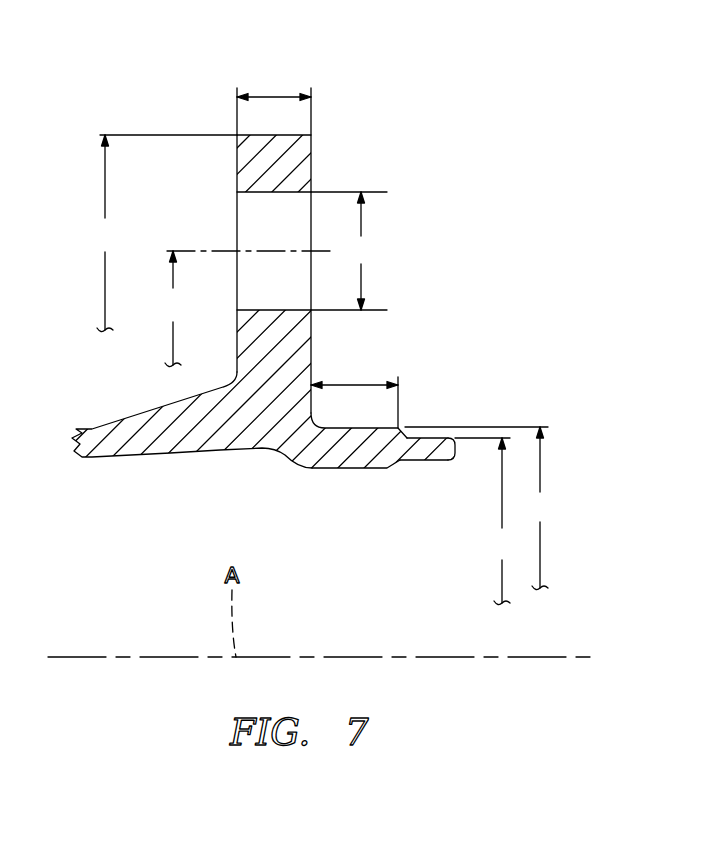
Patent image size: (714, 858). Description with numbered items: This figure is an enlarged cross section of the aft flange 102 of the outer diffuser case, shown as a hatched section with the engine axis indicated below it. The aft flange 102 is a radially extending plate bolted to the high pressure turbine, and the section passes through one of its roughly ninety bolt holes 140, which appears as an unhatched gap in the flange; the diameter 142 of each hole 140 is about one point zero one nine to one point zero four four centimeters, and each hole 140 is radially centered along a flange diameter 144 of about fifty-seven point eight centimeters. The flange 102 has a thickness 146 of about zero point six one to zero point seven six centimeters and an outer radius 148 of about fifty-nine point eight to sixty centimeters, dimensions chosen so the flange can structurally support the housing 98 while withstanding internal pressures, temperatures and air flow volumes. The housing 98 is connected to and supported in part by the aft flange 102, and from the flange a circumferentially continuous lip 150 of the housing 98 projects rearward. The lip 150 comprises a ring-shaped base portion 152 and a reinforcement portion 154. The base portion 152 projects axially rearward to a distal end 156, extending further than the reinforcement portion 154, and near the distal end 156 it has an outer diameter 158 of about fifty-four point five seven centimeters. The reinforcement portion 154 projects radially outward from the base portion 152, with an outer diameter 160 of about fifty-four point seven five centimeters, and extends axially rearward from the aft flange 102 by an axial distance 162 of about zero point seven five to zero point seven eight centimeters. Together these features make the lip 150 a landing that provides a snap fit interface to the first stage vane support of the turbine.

The housing 98 is at (142, 438).
The aft flange 102 is at (357, 308).
The bolt hole 140 is at (253, 215).
The bolt hole diameter 142 is at (349, 251).
The flange diameter 144 is at (241, 309).
The flange thickness 146 is at (277, 92).
The flange outer radius 148 is at (160, 233).
The lip 150 is at (375, 480).
The base portion 152 is at (418, 452).
The reinforcement portion 154 is at (400, 428).
The distal end 156 is at (457, 452).
The base portion outer diameter 158 is at (489, 521).
The reinforcement portion outer diameter 160 is at (483, 508).
The axial distance 162 is at (350, 385).